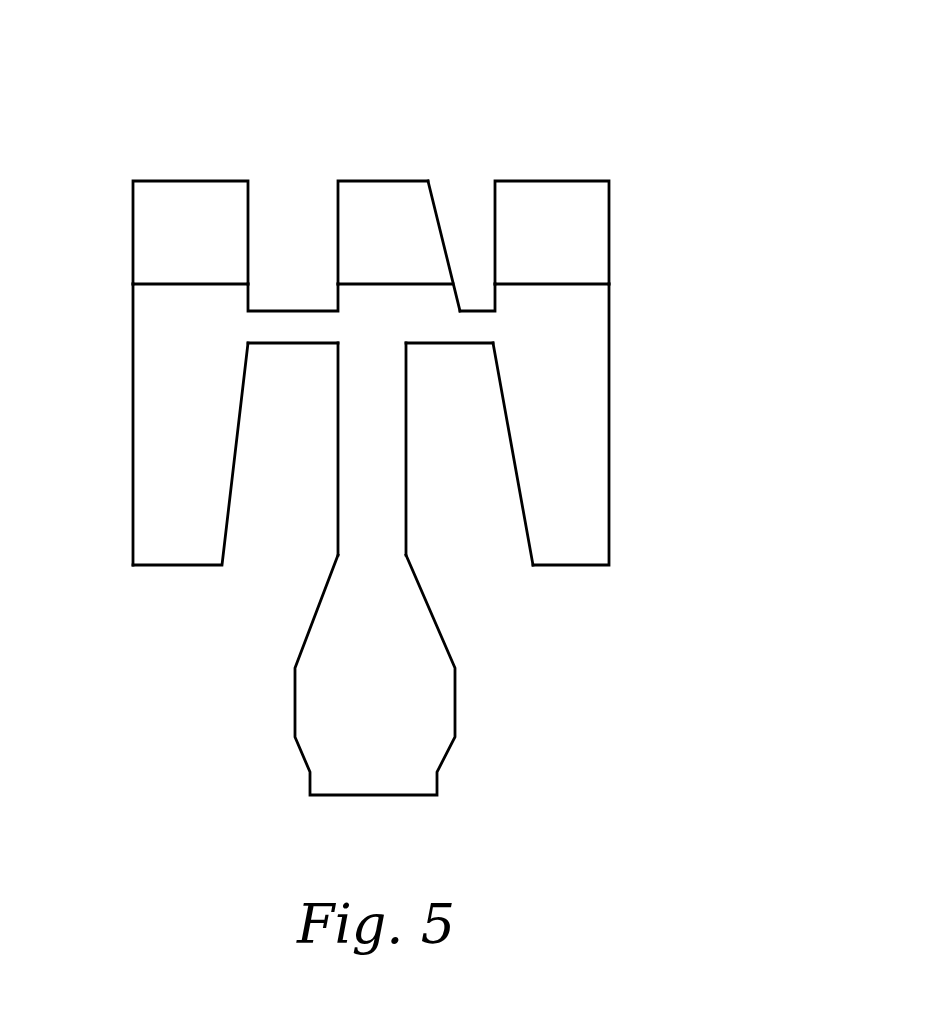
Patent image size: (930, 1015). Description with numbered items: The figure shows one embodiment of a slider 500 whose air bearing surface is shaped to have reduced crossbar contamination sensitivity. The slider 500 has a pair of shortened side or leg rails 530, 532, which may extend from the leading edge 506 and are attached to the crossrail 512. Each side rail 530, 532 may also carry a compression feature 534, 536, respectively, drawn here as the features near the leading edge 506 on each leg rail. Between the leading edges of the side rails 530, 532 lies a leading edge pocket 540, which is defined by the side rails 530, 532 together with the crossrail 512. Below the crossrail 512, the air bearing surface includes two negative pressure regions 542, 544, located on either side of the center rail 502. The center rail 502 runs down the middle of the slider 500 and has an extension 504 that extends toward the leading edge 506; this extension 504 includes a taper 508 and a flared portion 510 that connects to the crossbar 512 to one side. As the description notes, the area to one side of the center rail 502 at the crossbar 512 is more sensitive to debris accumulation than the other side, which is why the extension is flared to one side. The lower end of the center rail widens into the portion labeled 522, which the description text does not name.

The slider 500 is at (625, 86).
The center rail 502 is at (338, 430).
The extension 504 is at (338, 240).
The leading edge 506 is at (630, 192).
The taper 508 is at (388, 193).
The flared portion 510 is at (443, 235).
The crossrail 512 is at (312, 344).
The bottom tip portion 522 is at (437, 780).
The side rail 530 is at (150, 378).
The side rail 532 is at (590, 453).
The compression feature 534 is at (147, 207).
The compression feature 536 is at (590, 273).
The leading edge pocket 540 is at (347, 163).
The negative pressure region 542 is at (285, 523).
The negative pressure region 544 is at (480, 530).